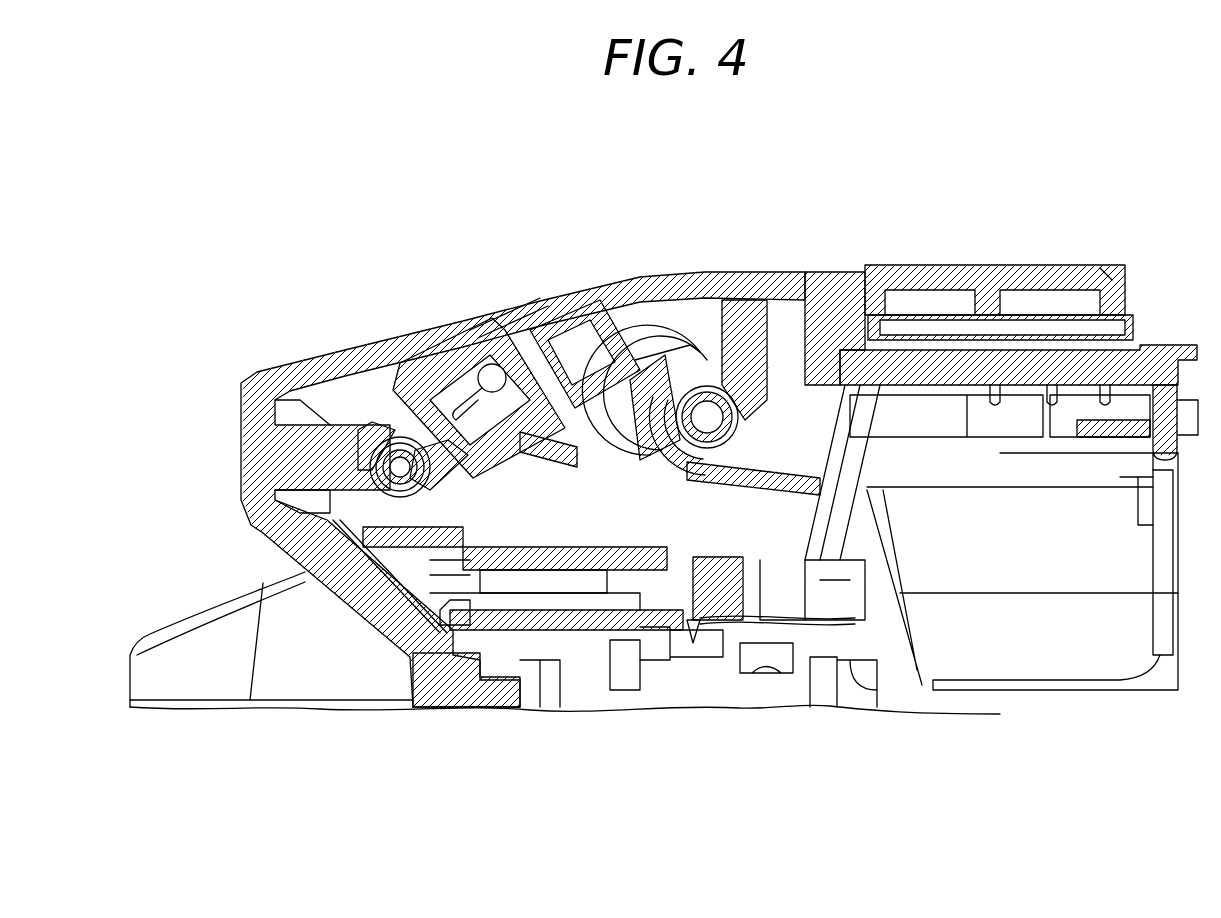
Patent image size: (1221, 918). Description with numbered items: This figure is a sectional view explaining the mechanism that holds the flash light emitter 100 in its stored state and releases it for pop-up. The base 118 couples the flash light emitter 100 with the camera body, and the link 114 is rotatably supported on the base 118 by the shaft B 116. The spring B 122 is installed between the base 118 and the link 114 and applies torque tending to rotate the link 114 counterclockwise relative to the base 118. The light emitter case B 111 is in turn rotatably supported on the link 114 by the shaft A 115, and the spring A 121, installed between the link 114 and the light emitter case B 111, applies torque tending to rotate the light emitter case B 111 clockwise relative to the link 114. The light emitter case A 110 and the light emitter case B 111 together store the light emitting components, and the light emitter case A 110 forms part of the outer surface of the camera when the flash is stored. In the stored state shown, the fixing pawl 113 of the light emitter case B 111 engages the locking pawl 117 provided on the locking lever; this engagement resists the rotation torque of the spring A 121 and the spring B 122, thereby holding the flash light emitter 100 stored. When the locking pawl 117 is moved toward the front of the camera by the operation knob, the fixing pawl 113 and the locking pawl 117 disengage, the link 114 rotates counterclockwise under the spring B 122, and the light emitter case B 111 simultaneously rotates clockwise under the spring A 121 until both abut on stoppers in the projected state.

The flash light emitter 100 is at (947, 202).
The light emitter case A 110 is at (362, 392).
The light emitter case B 111 is at (612, 437).
The fixing pawl 113 is at (578, 512).
The link 114 is at (500, 500).
The shaft A 115 is at (845, 320).
The shaft B 116 is at (403, 458).
The locking pawl 117 is at (600, 360).
The base 118 is at (363, 545).
The spring A 121 is at (709, 414).
The spring B 122 is at (372, 440).